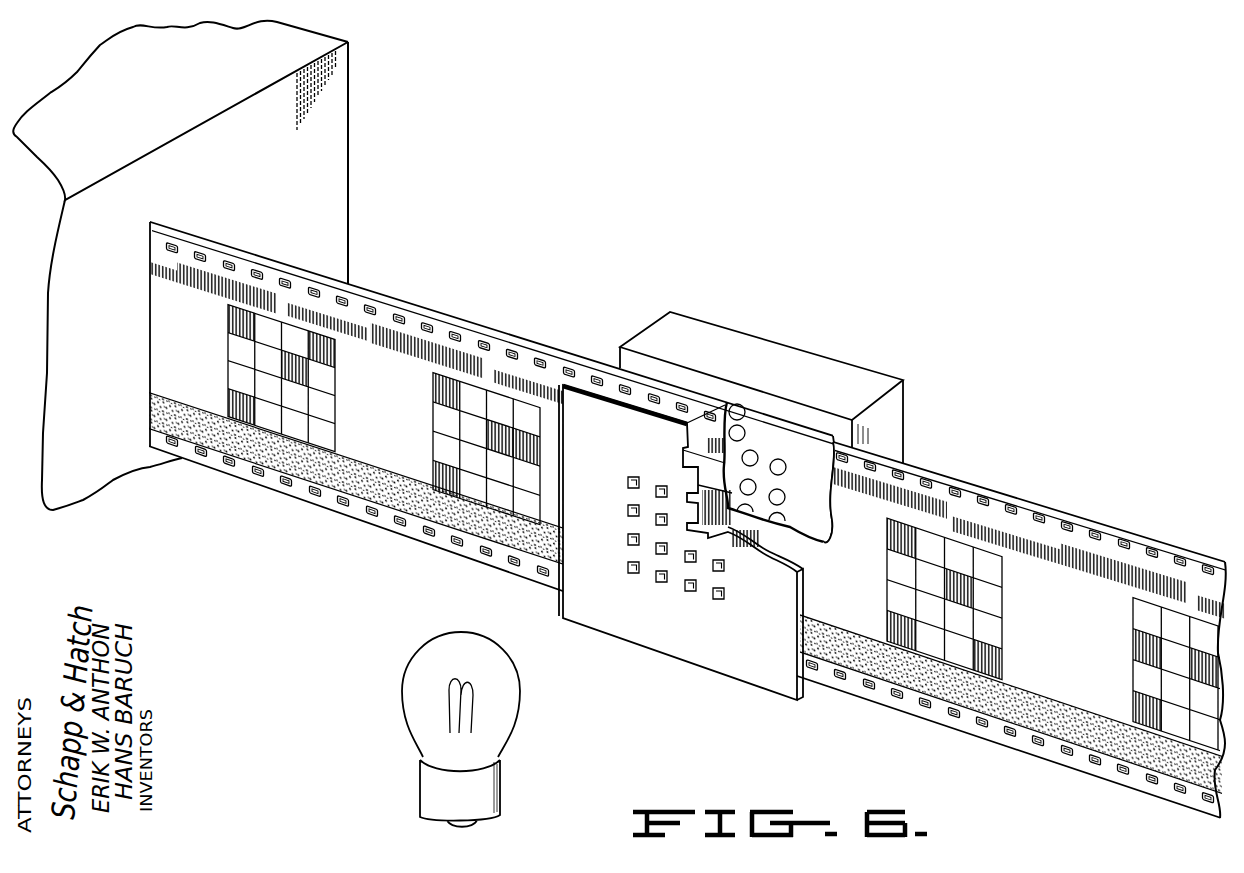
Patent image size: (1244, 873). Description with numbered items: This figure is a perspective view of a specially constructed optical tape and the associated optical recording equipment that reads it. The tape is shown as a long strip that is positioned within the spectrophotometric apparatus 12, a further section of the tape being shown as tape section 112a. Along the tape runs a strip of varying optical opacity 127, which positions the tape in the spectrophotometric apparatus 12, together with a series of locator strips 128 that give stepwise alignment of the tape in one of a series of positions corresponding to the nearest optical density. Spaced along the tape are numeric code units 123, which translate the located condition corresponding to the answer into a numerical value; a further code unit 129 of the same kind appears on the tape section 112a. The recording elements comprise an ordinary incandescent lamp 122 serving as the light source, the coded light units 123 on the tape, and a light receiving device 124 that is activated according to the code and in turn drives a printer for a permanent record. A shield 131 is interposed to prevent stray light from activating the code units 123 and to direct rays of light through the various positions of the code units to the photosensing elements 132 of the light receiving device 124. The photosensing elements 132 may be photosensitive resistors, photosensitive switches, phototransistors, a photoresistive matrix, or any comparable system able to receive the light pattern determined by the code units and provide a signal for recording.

The spectrophotometric apparatus 12 is at (340, 147).
The film strip section 112a is at (1008, 630).
The incandescent lamp 122 is at (510, 712).
The coded light units 123 is at (478, 397).
The light receiving device 124 is at (753, 403).
The strip of varying optical opacity 127 is at (1020, 700).
The locator strips 128 is at (370, 333).
The data frame 129 is at (1142, 613).
The shield 131 is at (755, 678).
The photosensing elements 132 is at (752, 458).